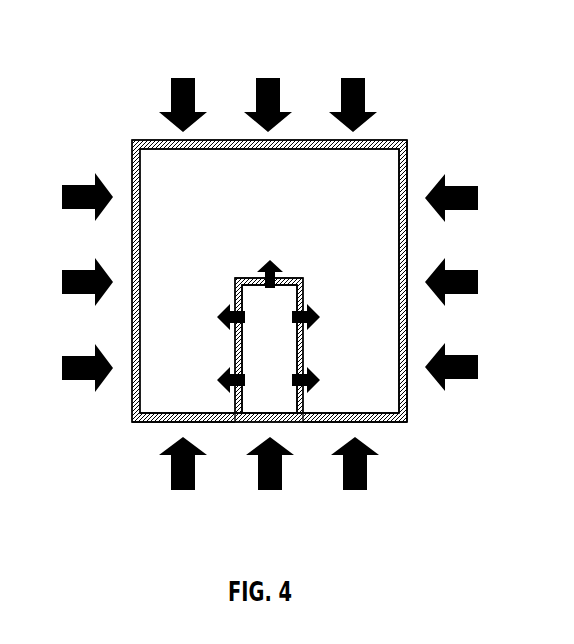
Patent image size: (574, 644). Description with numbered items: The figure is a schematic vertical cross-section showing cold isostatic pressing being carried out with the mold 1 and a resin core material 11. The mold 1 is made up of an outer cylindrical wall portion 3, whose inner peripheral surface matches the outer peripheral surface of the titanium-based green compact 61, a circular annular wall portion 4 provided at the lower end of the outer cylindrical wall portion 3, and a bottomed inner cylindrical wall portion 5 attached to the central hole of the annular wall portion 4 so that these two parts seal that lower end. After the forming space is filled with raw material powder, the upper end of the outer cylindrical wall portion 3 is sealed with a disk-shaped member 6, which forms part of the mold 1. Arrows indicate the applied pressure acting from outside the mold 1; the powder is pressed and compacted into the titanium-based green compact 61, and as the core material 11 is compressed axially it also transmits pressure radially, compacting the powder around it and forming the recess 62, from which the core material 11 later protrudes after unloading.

The mold 1 is at (258, 286).
The outer cylindrical wall portion 3 is at (407, 388).
The annular wall portion 4 is at (162, 421).
The inner cylindrical wall portion 5 is at (317, 423).
The disk-shaped member 6 is at (383, 140).
The resin core material 11 is at (285, 423).
The titanium-based green compact 61 is at (387, 180).
The recess 62 is at (250, 423).